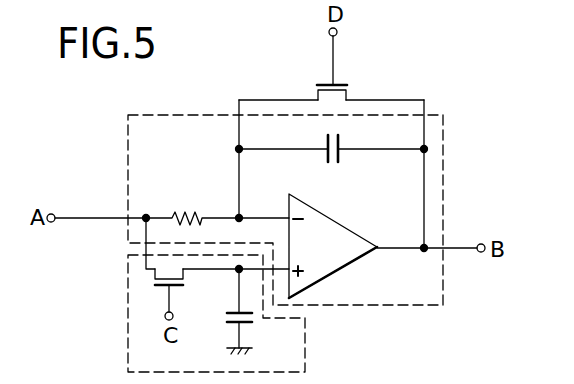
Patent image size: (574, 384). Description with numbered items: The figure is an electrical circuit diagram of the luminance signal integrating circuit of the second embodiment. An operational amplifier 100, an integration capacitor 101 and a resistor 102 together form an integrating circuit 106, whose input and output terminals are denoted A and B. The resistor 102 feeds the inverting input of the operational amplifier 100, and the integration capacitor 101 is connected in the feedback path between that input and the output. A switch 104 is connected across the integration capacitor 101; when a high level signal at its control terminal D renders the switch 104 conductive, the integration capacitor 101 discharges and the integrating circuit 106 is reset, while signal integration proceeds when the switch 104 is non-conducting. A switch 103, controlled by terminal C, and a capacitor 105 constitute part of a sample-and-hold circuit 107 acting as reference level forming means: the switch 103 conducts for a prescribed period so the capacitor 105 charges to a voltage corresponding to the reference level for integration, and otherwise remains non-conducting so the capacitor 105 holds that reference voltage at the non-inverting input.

The operational amplifier 100 is at (345, 226).
The integration capacitor 101 is at (337, 163).
The resistor 102 is at (180, 212).
The switch 103 is at (189, 282).
The switch 104 is at (349, 91).
The capacitor 105 is at (255, 318).
The integrating circuit 106 is at (444, 160).
The sample-and-hold circuit 107 is at (128, 332).